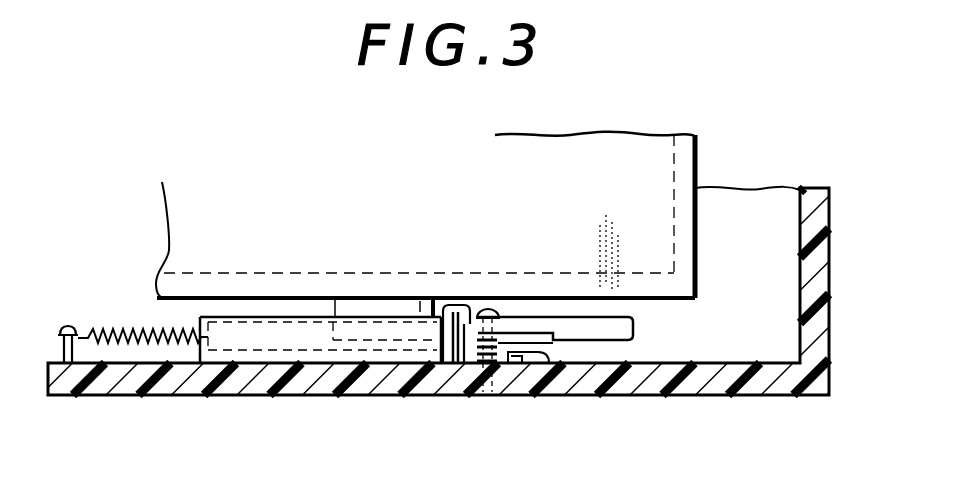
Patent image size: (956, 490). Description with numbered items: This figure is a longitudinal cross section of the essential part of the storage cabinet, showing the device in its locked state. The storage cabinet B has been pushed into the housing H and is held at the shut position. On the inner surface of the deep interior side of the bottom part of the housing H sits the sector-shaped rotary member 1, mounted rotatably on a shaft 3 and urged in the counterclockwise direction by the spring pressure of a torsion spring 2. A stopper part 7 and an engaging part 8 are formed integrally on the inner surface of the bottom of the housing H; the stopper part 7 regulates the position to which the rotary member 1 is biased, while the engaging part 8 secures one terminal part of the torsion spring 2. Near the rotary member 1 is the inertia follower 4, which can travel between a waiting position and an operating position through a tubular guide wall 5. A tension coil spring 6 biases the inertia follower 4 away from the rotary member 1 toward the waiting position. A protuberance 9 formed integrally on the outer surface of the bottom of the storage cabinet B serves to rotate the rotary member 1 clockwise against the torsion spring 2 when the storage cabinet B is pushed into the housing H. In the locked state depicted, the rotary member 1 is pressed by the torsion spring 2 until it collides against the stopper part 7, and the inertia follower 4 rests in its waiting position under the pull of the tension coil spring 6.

The sector-shaped rotary member 1 is at (607, 330).
The torsion spring 2 is at (495, 380).
The shaft 3 is at (488, 310).
The inertia follower 4 is at (461, 325).
The tubular guide wall 5 is at (310, 342).
The tension coil spring 6 is at (133, 342).
The stopper part 7 is at (463, 305).
The engaging part 8 is at (546, 362).
The protuberance 9 is at (398, 308).
The storage cabinet B is at (644, 148).
The housing H is at (810, 212).